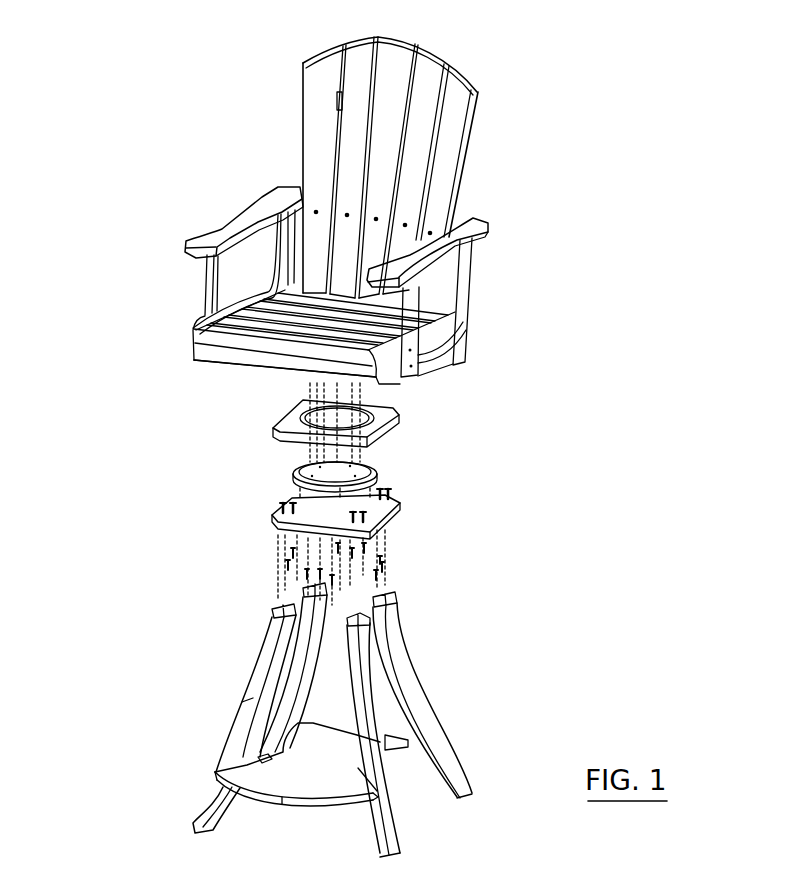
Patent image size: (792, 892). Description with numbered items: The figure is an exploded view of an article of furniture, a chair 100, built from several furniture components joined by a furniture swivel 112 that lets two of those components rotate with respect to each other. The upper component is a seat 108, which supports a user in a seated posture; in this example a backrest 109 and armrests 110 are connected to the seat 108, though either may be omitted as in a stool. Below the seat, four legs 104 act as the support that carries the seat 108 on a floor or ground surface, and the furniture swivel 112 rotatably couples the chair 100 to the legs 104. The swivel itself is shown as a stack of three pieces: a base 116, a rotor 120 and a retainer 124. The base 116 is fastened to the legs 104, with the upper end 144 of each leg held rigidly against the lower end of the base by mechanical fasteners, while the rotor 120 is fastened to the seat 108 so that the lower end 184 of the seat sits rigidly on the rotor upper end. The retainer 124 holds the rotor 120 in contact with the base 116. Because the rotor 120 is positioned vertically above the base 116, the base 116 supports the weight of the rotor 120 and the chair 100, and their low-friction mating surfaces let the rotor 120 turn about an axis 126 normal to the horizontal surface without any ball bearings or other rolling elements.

The chair 100 is at (662, 82).
The legs 104 is at (303, 687).
The seat 108 is at (220, 335).
The backrest 109 is at (447, 162).
The armrests 110 is at (457, 238).
The furniture swivel 112 is at (497, 468).
The base 116 is at (395, 513).
The rotor 120 is at (373, 477).
The retainer 124 is at (392, 420).
The axis 126 is at (333, 420).
The upper end of legs 144 is at (303, 592).
The lower end of seat 184 is at (400, 380).